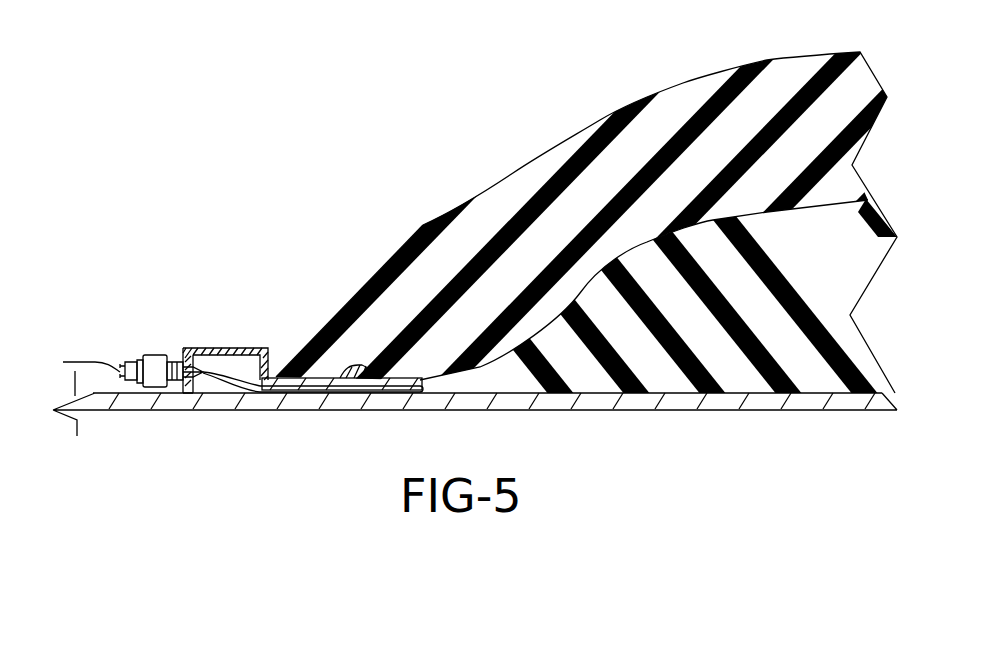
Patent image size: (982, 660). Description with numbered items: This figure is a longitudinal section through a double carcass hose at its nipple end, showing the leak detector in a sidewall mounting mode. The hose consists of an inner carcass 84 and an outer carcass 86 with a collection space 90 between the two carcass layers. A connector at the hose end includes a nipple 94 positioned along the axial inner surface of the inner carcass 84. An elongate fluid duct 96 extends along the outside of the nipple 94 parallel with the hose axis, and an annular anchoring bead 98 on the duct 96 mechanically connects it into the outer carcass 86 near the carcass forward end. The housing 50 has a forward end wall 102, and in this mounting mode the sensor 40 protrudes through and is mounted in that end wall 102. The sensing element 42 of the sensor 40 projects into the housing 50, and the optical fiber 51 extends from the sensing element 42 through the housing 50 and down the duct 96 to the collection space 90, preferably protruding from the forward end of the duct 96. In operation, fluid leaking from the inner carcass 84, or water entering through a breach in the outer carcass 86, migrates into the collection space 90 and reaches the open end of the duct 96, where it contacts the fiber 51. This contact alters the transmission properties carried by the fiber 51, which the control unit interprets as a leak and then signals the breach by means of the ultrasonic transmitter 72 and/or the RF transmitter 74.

The sensor 40 is at (158, 350).
The sensing element 42 is at (213, 345).
The housing 50 is at (285, 345).
The optical fiber 51 is at (205, 374).
The ultrasonic transmitter 72 is at (128, 362).
The RF transmitter 74 is at (74, 363).
The inner carcass 84 is at (710, 333).
The outer carcass 86 is at (667, 107).
The collection space 90 is at (467, 377).
The nipple 94 is at (843, 398).
The fluid duct 96 is at (348, 393).
The annular anchoring bead 98 is at (358, 368).
The forward end wall 102 is at (192, 378).